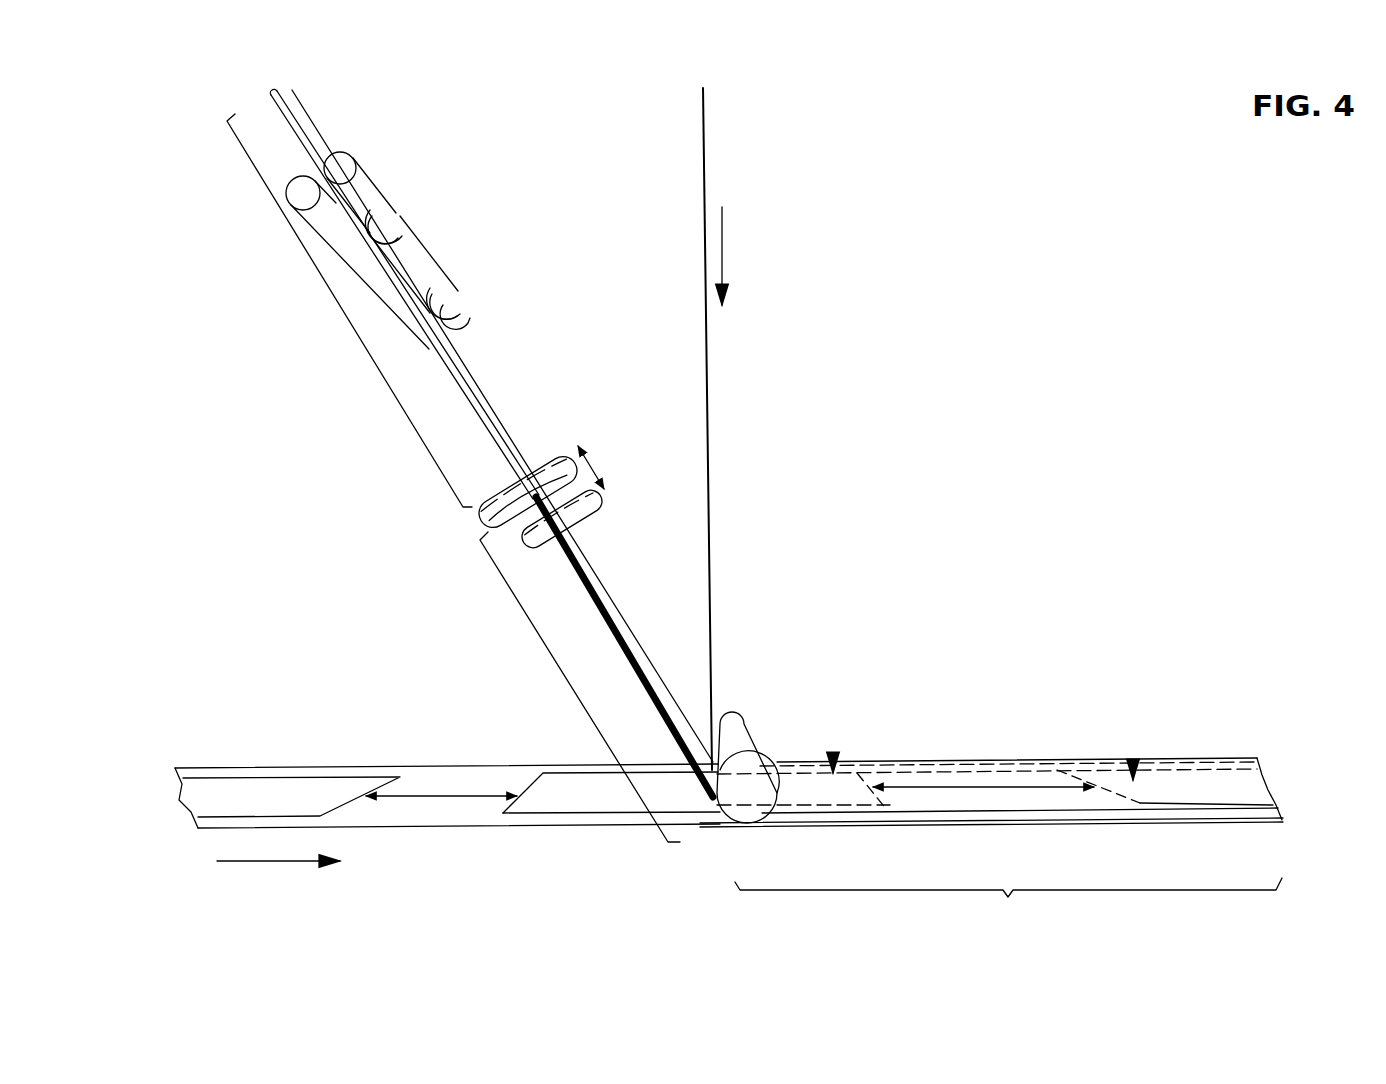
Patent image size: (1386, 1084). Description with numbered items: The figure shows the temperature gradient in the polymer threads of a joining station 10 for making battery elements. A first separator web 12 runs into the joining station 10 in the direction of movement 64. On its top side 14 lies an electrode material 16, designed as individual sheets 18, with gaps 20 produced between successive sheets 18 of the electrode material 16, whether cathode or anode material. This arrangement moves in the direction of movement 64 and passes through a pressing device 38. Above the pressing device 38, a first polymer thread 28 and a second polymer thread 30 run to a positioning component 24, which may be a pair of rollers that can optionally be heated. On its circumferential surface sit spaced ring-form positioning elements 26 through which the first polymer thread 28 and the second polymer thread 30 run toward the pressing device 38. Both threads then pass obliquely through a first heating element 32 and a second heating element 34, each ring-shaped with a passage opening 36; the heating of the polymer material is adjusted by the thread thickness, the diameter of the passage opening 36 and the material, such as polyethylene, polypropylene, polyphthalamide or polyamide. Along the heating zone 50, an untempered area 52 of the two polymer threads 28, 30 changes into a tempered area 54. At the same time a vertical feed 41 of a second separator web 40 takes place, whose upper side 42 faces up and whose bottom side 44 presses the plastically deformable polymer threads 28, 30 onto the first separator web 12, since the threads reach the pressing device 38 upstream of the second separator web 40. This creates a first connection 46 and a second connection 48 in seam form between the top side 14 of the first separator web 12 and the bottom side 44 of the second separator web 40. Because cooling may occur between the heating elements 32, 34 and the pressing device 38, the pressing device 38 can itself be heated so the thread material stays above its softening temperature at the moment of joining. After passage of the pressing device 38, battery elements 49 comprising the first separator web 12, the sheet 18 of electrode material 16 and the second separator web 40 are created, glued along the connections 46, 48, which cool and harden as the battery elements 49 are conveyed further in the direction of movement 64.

The joining station 10 is at (950, 406).
The first separator web 12 is at (729, 829).
The top side 14 is at (399, 828).
The electrode material 16 is at (728, 749).
The sheet 18 is at (256, 790).
The gap 20 is at (418, 796).
The positioning component 24 is at (395, 208).
The positioning element 26 is at (460, 317).
The first polymer thread 28 is at (468, 405).
The second polymer thread 30 is at (470, 368).
The first heating element 32 is at (510, 493).
The second heating element 34 is at (597, 493).
The passage opening 36 is at (592, 537).
The pressing device 38 is at (735, 730).
The second separator web 40 is at (807, 434).
The vertical feed 41 is at (724, 238).
The upper side 42 is at (807, 434).
The bottom side 44 is at (706, 143).
The first connection 46 is at (943, 818).
The second connection 48 is at (940, 768).
The battery element 49 is at (833, 765).
The heating zone 50 is at (583, 467).
The untempered area 52 is at (356, 322).
The tempered area 54 is at (578, 698).
The direction of movement 64 is at (267, 864).